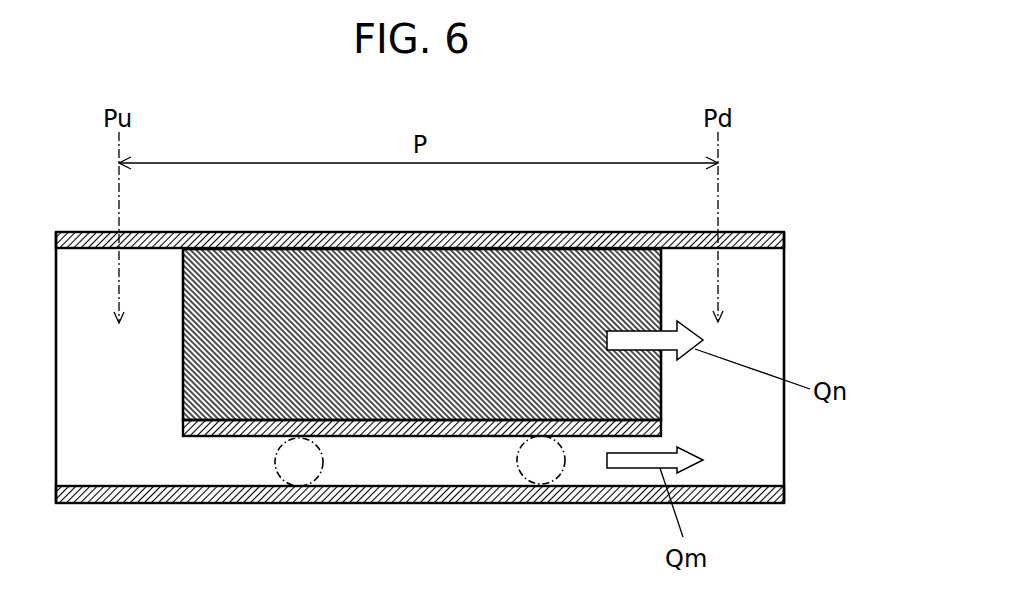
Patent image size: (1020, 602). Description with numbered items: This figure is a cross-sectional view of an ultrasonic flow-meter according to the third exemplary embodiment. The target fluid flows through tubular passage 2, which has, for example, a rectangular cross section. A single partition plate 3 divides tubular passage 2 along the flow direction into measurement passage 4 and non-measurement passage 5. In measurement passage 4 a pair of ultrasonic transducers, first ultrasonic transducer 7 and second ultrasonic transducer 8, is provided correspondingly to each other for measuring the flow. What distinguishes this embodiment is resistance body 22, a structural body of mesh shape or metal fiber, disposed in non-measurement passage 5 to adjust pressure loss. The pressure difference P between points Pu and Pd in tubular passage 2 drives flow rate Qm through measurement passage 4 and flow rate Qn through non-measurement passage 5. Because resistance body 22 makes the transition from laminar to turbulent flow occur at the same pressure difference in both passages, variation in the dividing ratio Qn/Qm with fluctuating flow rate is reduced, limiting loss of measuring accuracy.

The tubular passage 2 is at (95, 407).
The partition plate 3 is at (425, 428).
The measurement passage 4 is at (237, 462).
The non-measurement passage 5 is at (240, 330).
The first ultrasonic transducer 7 is at (302, 470).
The second ultrasonic transducer 8 is at (543, 465).
The resistance body 22 is at (533, 345).